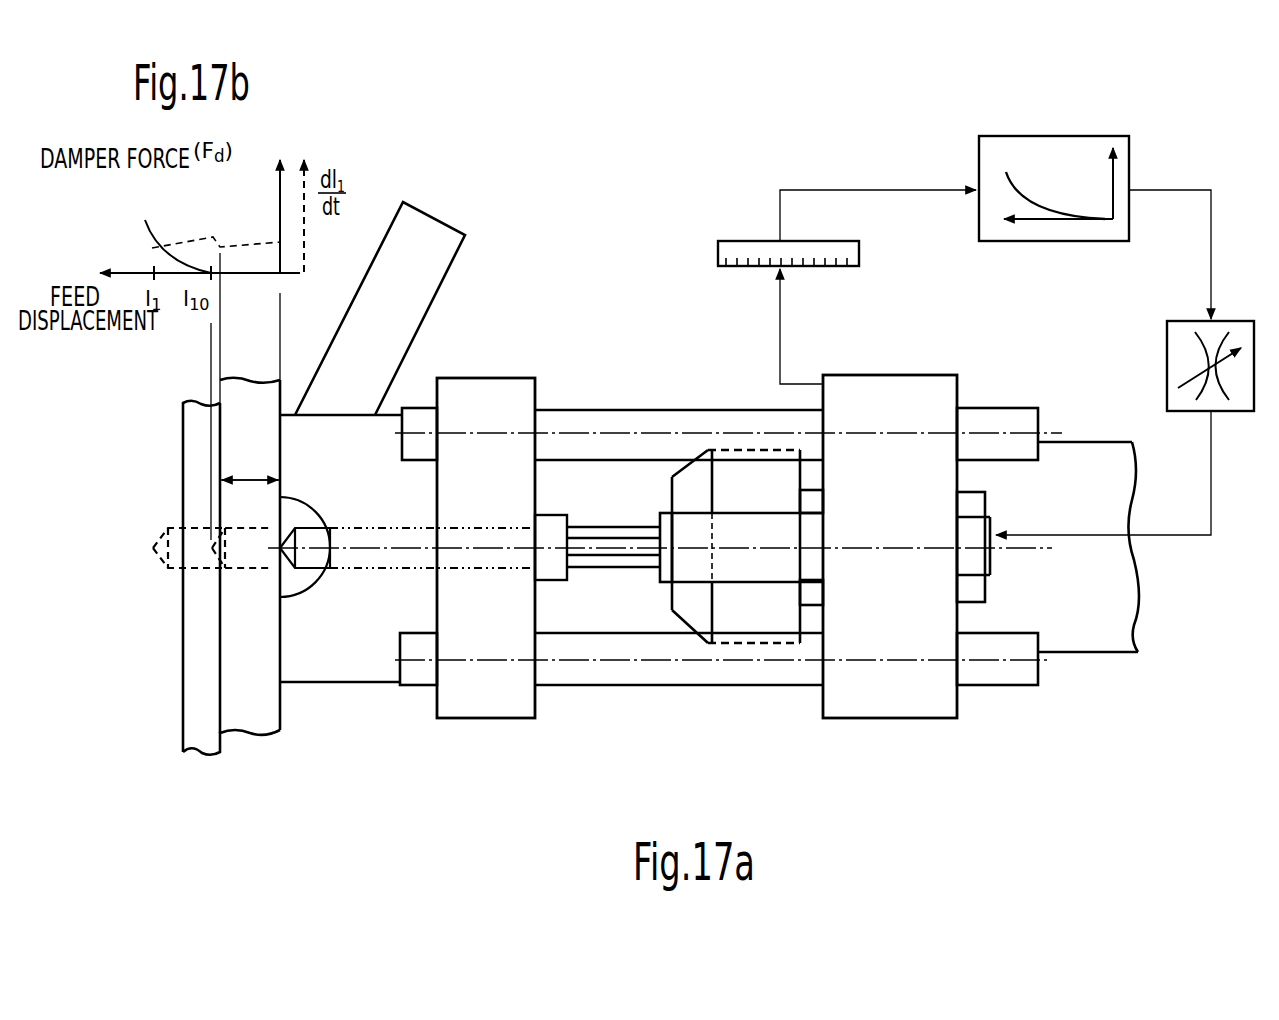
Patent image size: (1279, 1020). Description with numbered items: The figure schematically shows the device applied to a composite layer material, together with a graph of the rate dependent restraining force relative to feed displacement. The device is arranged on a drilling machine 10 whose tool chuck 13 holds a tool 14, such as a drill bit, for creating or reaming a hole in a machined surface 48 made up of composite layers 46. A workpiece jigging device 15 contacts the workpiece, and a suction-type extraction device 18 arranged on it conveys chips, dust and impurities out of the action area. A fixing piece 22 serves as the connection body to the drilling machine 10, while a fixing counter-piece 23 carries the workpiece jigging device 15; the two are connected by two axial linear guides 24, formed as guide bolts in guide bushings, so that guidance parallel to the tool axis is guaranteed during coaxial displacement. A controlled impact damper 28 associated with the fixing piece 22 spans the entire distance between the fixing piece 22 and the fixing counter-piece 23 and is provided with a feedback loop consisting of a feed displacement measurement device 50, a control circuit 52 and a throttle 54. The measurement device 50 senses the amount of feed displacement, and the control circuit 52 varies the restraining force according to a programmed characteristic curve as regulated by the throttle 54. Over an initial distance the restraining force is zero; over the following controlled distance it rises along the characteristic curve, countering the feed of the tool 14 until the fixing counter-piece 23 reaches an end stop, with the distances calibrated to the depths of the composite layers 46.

The drilling machine 10 is at (1105, 632).
The tool chuck 13 is at (688, 488).
The tool 14 is at (585, 561).
The workpiece jigging device 15 is at (323, 658).
The suction-type extraction device 18 is at (415, 246).
The fixing piece 22 is at (897, 700).
The fixing counter-piece 23 is at (539, 695).
The axial linear guides 24 is at (794, 670).
The controlled impact damper 28 is at (760, 530).
The composite layers 46 is at (247, 705).
The machined surface 48 is at (282, 740).
The feed displacement measurement device 50 is at (706, 236).
The control circuit 52 is at (991, 127).
The throttle 54 is at (1158, 357).